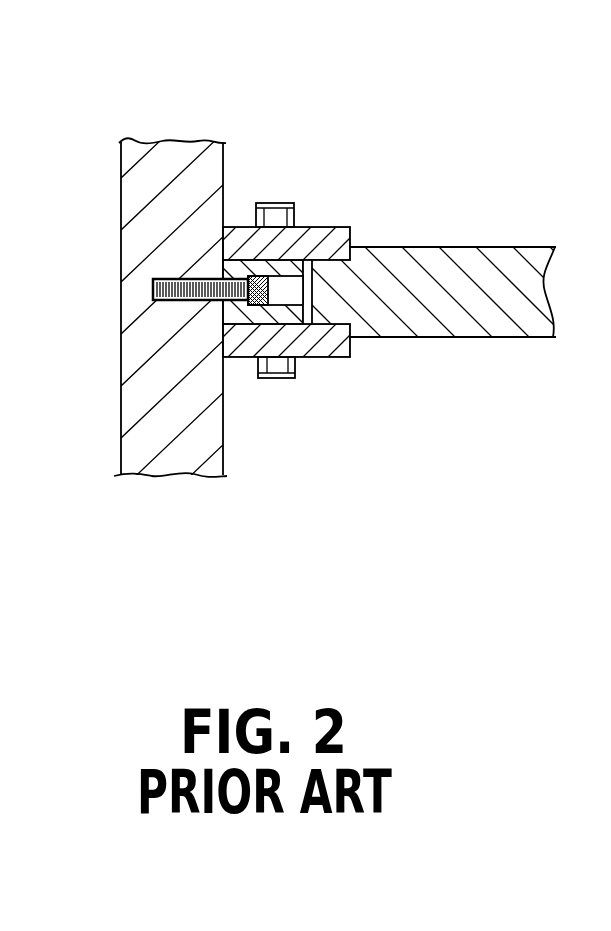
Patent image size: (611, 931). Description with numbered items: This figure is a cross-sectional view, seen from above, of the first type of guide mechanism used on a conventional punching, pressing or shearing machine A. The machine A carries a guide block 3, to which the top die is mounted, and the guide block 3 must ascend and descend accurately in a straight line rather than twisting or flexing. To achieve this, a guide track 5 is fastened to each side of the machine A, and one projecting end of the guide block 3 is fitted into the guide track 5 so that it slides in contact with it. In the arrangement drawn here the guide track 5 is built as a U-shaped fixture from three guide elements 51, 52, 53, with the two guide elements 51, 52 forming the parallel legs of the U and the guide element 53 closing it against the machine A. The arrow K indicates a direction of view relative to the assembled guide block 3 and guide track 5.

The machine A is at (135, 197).
The guide block 3 is at (492, 288).
The guide track 5 is at (281, 295).
The guide element 51 is at (303, 235).
The guide element 52 is at (317, 355).
The guide element 53 is at (252, 310).
The direction arrow K is at (432, 455).